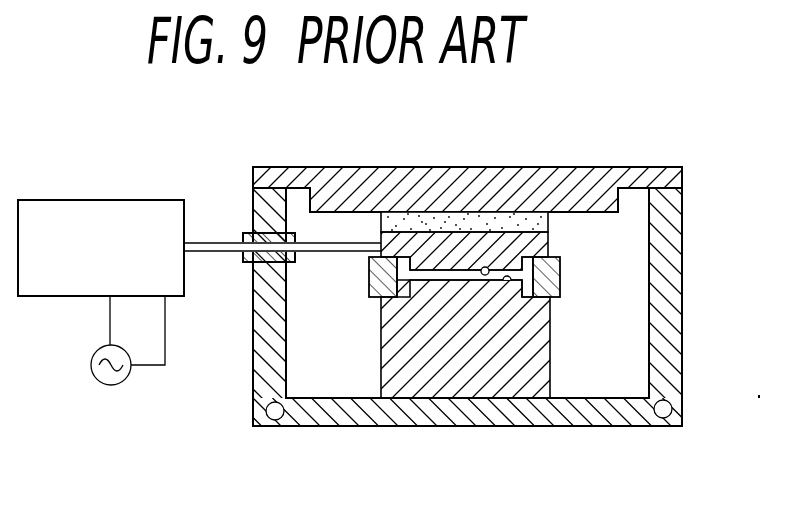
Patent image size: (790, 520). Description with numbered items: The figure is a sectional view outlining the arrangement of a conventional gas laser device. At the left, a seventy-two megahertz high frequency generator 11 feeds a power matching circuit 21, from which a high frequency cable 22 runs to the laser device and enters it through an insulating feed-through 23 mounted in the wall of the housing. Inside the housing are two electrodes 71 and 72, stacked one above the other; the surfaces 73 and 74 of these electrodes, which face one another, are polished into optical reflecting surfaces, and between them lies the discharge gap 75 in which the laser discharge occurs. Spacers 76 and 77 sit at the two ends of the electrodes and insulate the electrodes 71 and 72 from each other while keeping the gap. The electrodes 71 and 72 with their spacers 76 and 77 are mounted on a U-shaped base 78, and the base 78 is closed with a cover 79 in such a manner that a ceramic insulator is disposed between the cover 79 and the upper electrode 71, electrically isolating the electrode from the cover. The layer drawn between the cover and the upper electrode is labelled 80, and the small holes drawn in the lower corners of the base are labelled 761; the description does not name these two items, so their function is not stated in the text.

The high frequency generator 11 is at (125, 378).
The power matching circuit 21 is at (148, 199).
The high frequency cable 22 is at (215, 240).
The insulating feed-through 23 is at (245, 265).
The electrode 71 is at (552, 242).
The electrode 72 is at (540, 380).
The surface of electrode 73 is at (484, 267).
The surface of electrode 74 is at (508, 282).
The discharge gap 75 is at (545, 286).
The spacer 76 is at (369, 288).
The spacer 77 is at (562, 270).
The U-shaped base 78 is at (555, 427).
The cover 79 is at (342, 170).
The dielectric layer 80 is at (412, 213).
The gas hole 761 is at (276, 420).